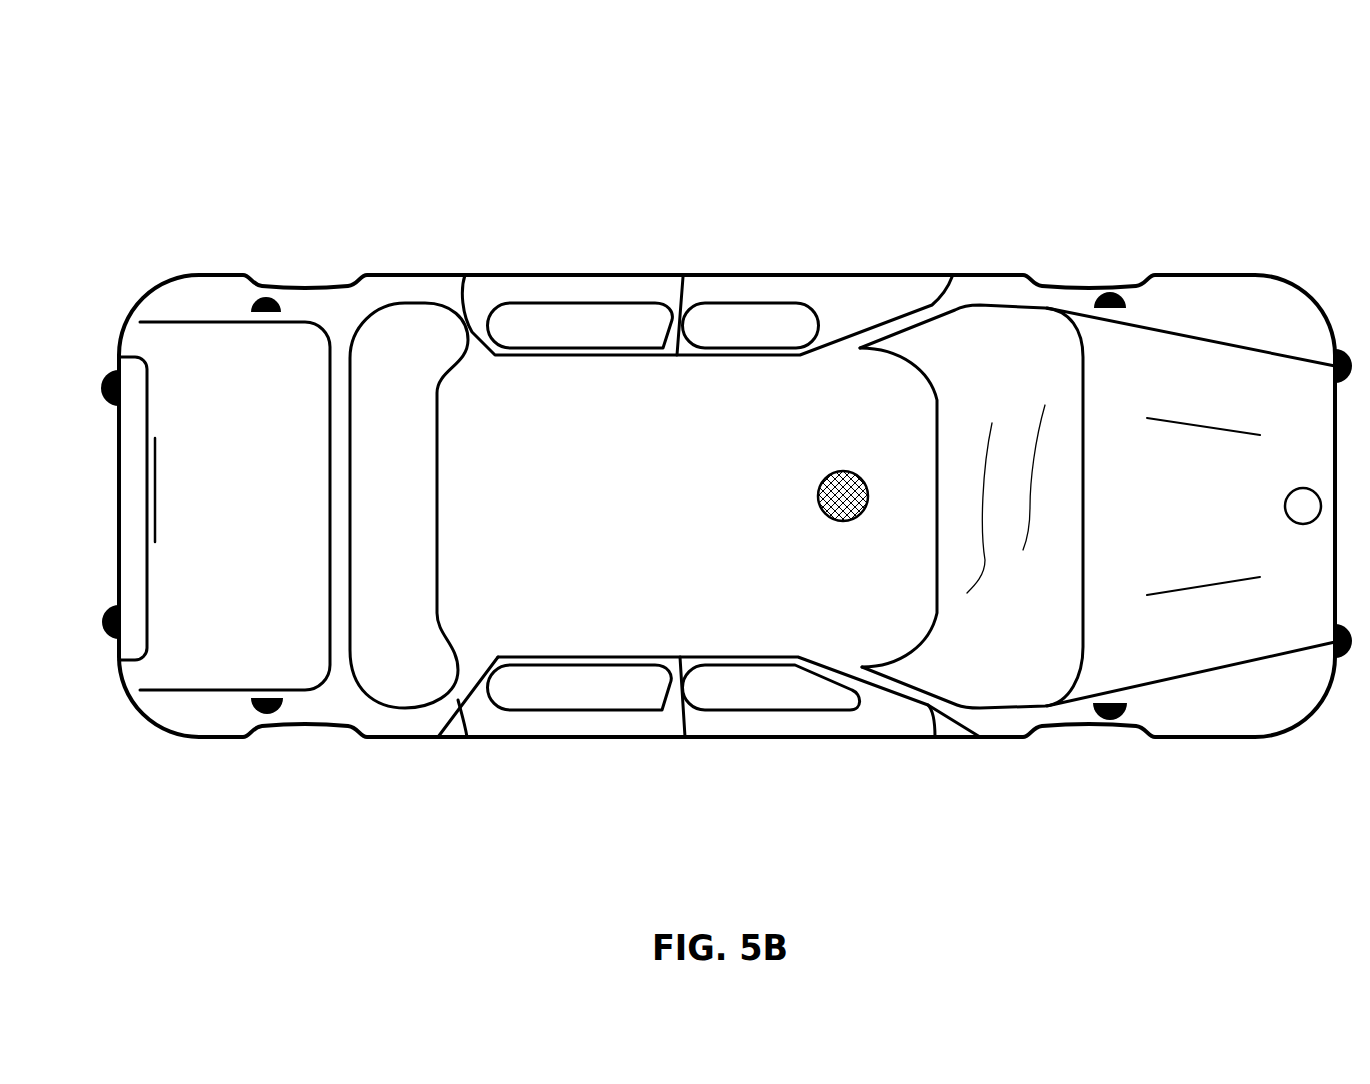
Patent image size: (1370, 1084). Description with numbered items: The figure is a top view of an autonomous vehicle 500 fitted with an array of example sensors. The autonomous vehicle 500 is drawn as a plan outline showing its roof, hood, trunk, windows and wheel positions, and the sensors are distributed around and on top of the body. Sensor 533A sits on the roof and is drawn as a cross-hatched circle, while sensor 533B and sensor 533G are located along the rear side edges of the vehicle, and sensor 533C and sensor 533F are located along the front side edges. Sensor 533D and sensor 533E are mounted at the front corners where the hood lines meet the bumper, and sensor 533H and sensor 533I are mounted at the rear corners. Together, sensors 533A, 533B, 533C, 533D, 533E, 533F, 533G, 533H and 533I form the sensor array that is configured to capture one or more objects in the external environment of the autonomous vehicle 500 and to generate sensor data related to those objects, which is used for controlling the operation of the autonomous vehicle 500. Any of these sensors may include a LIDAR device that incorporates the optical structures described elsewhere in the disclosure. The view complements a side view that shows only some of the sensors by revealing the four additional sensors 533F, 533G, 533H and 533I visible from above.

The autonomous vehicle 500 is at (1203, 118).
The sensor 533A is at (843, 472).
The sensor 533B is at (285, 703).
The sensor 533C is at (1130, 706).
The sensor 533D is at (1330, 634).
The sensor 533E is at (1330, 374).
The sensor 533F is at (1128, 303).
The sensor 533G is at (283, 307).
The sensor 533H is at (124, 386).
The sensor 533I is at (124, 620).